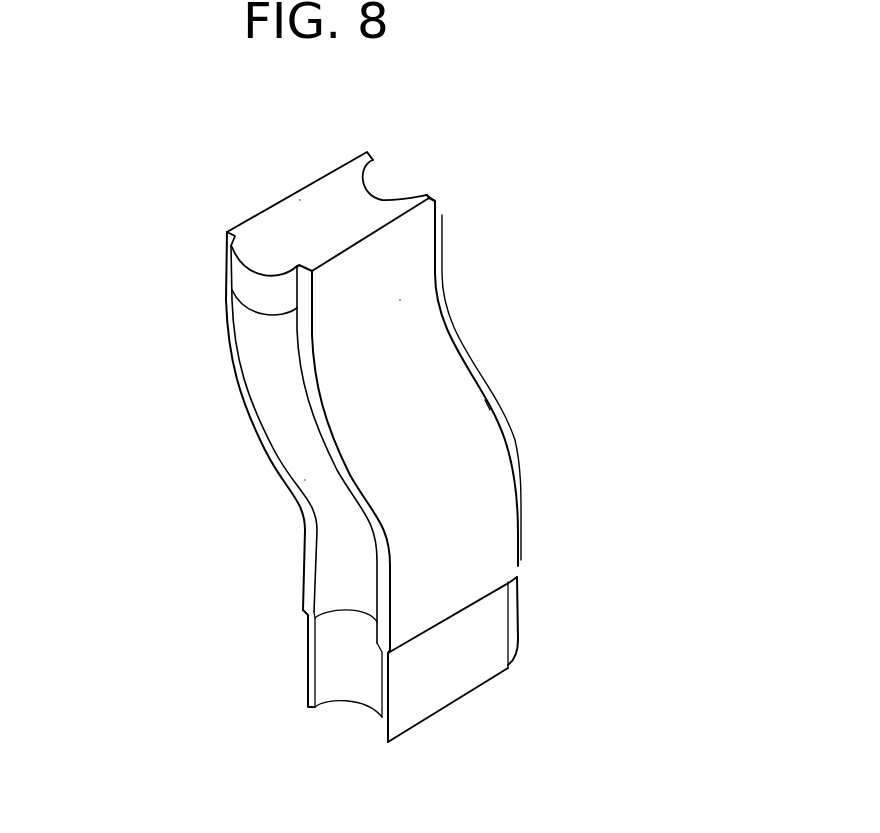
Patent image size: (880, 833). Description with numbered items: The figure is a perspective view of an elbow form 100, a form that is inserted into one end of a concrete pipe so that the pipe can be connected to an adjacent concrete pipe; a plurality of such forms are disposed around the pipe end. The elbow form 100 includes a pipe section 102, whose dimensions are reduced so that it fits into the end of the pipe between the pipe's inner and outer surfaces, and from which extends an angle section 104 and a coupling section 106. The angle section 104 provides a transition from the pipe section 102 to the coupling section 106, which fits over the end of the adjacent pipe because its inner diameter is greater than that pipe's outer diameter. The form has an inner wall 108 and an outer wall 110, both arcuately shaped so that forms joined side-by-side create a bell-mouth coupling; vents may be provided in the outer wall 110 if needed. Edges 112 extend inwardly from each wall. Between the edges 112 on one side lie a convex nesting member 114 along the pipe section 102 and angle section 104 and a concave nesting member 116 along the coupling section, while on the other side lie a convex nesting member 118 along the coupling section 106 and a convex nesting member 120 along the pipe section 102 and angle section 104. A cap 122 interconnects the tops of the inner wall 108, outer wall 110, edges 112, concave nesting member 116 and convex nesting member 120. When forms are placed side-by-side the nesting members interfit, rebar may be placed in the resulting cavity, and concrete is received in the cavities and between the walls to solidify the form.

The elbow form 100 is at (424, 411).
The pipe section 102 is at (537, 613).
The angle section 104 is at (537, 433).
The coupling section 106 is at (457, 175).
The inner wall 108 is at (425, 398).
The outer wall 110 is at (293, 190).
The edges 112 is at (374, 158).
The convex nesting member 114 is at (490, 392).
The concave nesting member 116 is at (428, 195).
The convex nesting member 118 is at (247, 290).
The convex nesting member 120 is at (252, 500).
The cap 122 is at (295, 213).